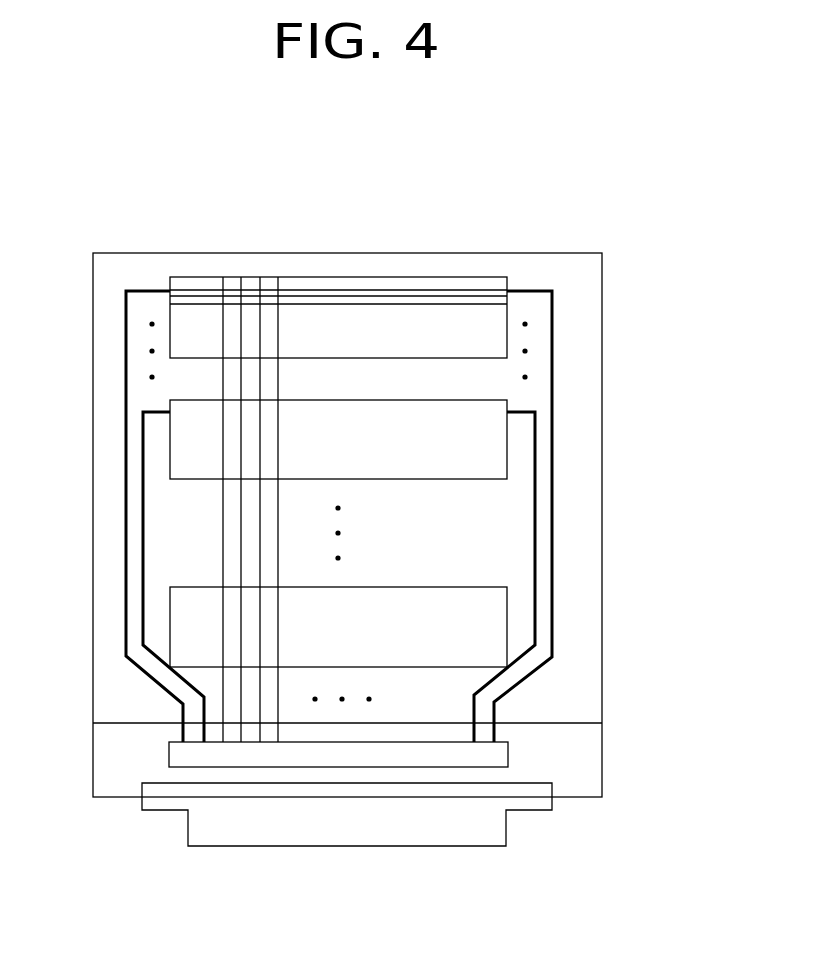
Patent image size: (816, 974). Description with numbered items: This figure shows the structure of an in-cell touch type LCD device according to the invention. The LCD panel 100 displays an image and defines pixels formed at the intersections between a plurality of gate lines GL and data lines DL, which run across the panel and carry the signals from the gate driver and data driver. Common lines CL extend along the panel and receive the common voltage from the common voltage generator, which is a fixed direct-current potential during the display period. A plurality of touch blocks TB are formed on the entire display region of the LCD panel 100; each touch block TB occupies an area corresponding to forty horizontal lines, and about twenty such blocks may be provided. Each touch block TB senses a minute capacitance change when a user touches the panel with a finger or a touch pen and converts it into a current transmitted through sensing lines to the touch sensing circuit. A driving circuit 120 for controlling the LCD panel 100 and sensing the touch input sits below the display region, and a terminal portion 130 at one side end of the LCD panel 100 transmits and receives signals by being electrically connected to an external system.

The LCD panel 100 is at (602, 525).
The driving circuit 120 is at (508, 753).
The terminal portion 130 is at (500, 830).
The gate line GL is at (126, 511).
The data line DL is at (279, 320).
The common line CL is at (552, 445).
The touch block TB is at (507, 316).